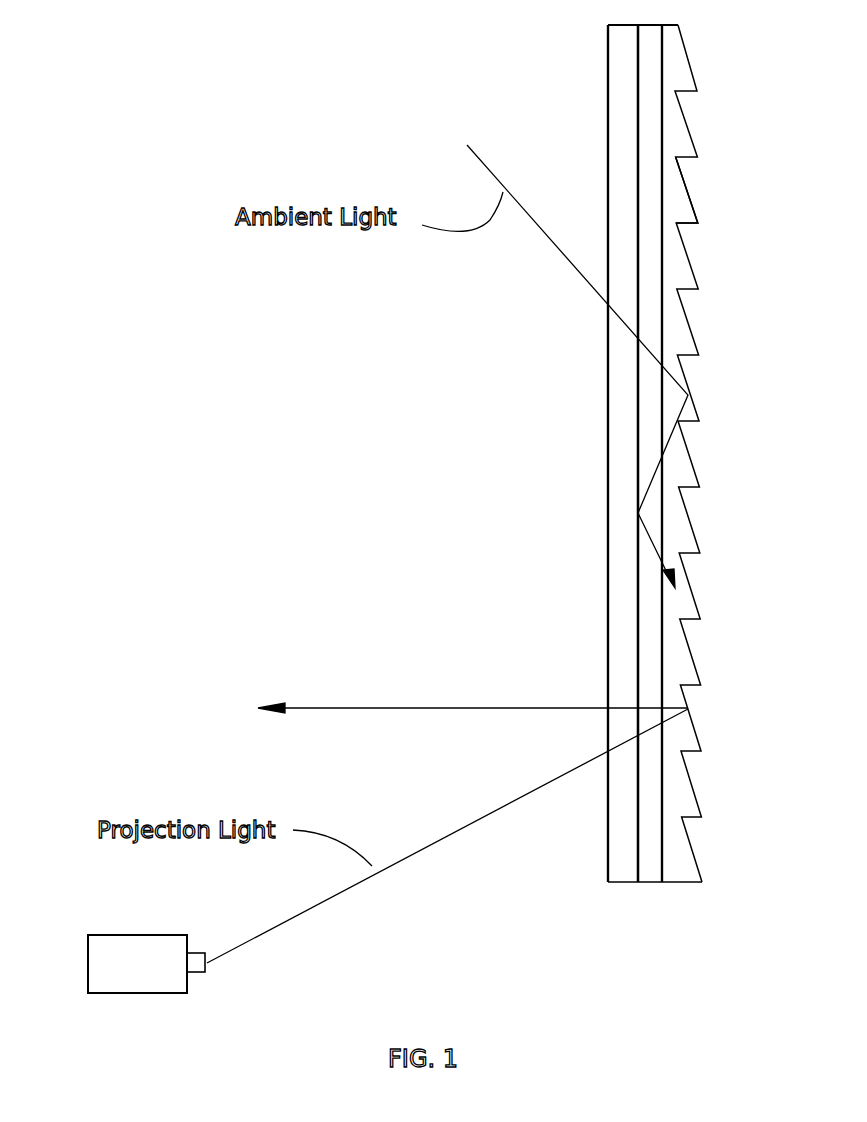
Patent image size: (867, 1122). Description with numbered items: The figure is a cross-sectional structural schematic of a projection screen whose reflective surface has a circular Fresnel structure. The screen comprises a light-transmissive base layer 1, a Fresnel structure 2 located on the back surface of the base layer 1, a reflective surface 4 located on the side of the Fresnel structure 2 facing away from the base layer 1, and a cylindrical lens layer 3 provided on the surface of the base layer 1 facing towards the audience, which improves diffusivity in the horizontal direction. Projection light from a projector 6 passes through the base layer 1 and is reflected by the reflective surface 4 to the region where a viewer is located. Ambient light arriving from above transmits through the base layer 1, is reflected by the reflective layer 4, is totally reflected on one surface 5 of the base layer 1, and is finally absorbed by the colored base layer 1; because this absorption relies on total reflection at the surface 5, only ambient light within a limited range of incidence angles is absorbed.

The light-transmissive base layer 1 is at (643, 72).
The Fresnel structure 2 is at (670, 47).
The cylindrical lens layer 3 is at (627, 542).
The reflective surface 4 is at (685, 208).
The surface of the base layer 5 is at (638, 437).
The projector 6 is at (133, 948).